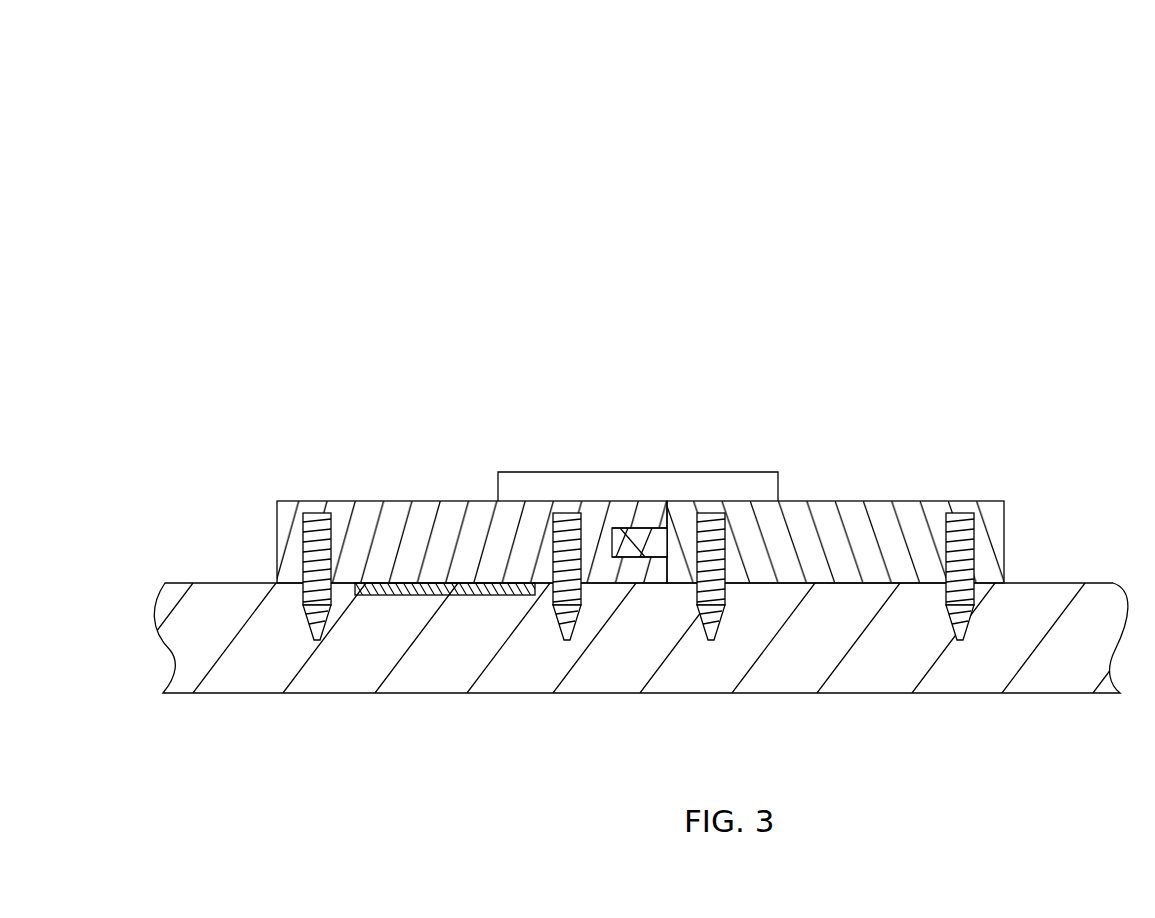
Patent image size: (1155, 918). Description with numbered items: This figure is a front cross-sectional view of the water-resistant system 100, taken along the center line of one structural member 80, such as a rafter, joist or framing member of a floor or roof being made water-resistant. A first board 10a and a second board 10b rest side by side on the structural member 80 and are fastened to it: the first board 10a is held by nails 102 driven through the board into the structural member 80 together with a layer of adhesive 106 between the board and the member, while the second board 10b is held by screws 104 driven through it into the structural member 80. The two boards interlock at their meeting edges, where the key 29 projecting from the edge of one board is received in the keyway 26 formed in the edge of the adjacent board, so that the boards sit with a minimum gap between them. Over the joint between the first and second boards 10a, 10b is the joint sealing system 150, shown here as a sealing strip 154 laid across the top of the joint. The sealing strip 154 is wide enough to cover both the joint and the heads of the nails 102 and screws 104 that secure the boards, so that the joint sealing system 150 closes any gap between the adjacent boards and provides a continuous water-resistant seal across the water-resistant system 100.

The water-resistant system 100 is at (968, 57).
The structural member 80 is at (632, 593).
The nails 102 is at (472, 414).
The screws 104 is at (835, 413).
The first board 10a is at (442, 484).
The second board 10b is at (835, 484).
The adhesive 106 is at (428, 502).
The joint sealing system 150 is at (680, 359).
The sealing strip 154 is at (638, 331).
The keyway 26 is at (609, 655).
The key 29 is at (679, 640).